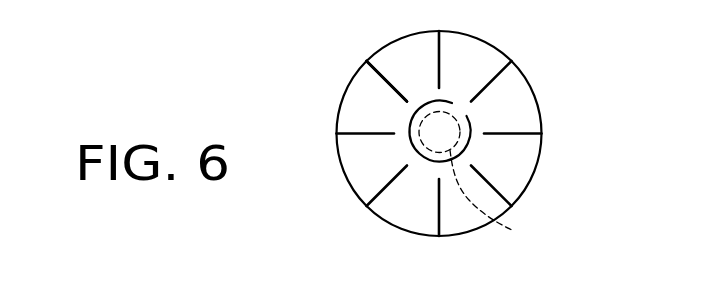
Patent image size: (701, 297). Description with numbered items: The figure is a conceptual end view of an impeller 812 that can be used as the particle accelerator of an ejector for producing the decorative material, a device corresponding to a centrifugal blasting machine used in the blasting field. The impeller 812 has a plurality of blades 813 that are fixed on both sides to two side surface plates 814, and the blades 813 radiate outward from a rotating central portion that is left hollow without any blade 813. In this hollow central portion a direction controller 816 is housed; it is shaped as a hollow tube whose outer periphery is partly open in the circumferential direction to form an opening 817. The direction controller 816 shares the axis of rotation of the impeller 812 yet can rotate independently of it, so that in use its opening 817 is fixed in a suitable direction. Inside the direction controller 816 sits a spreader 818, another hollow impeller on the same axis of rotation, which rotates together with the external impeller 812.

The impeller 812 is at (347, 183).
The blade 813 is at (383, 77).
The side surface plate 814 is at (493, 58).
The direction controller 816 is at (464, 148).
The opening 817 is at (462, 112).
The spreader 818 is at (509, 200).